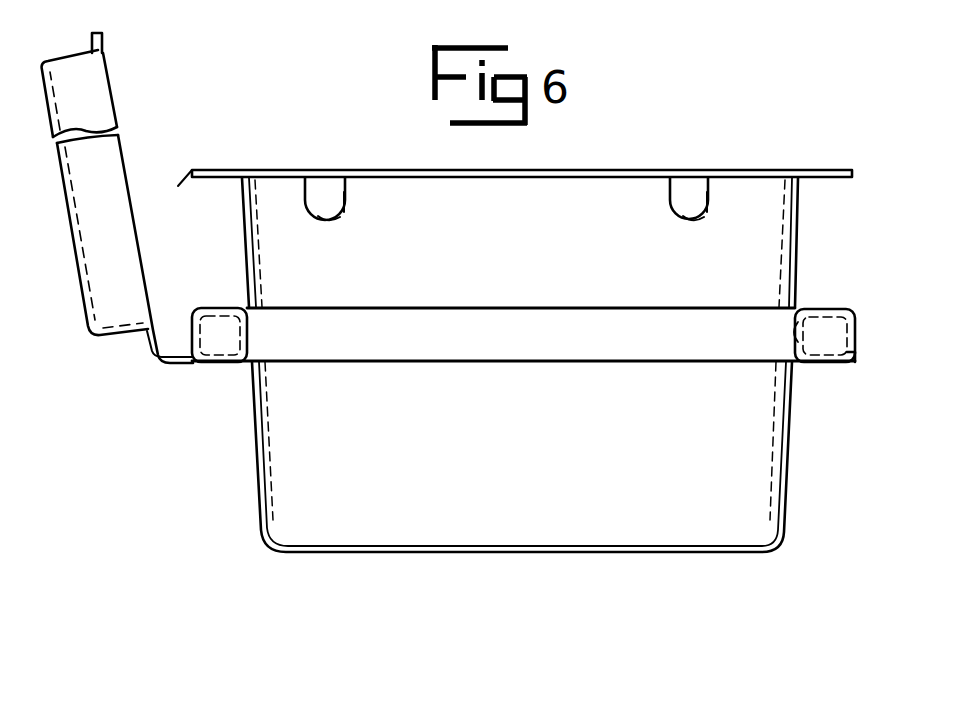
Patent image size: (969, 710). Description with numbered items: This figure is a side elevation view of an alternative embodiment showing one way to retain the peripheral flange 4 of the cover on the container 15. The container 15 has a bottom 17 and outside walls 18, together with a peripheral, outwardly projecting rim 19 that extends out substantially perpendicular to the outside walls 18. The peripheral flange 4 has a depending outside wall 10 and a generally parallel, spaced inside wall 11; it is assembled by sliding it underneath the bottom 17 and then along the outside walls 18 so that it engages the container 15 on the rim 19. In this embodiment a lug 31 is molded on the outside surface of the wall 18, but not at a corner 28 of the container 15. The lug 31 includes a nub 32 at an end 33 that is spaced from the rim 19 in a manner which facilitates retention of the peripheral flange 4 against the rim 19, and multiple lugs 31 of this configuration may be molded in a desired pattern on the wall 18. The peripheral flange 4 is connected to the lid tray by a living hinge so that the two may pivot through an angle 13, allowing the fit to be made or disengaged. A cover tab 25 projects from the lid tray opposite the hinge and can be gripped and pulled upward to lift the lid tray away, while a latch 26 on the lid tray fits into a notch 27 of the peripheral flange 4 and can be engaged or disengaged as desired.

The cover tab 25 is at (103, 37).
The latch 26 is at (101, 62).
The angle 13 is at (143, 258).
The rim 19 is at (190, 174).
The lug 31 is at (318, 196).
The nub 32 is at (347, 207).
The end 33 is at (340, 222).
The corner 28 is at (802, 186).
The inside wall 11 is at (808, 306).
The outside wall 10 is at (528, 355).
The peripheral flange 4 is at (346, 346).
The notch 27 is at (855, 357).
The outside wall 18 is at (575, 468).
The container 15 is at (750, 490).
The bottom 17 is at (693, 555).